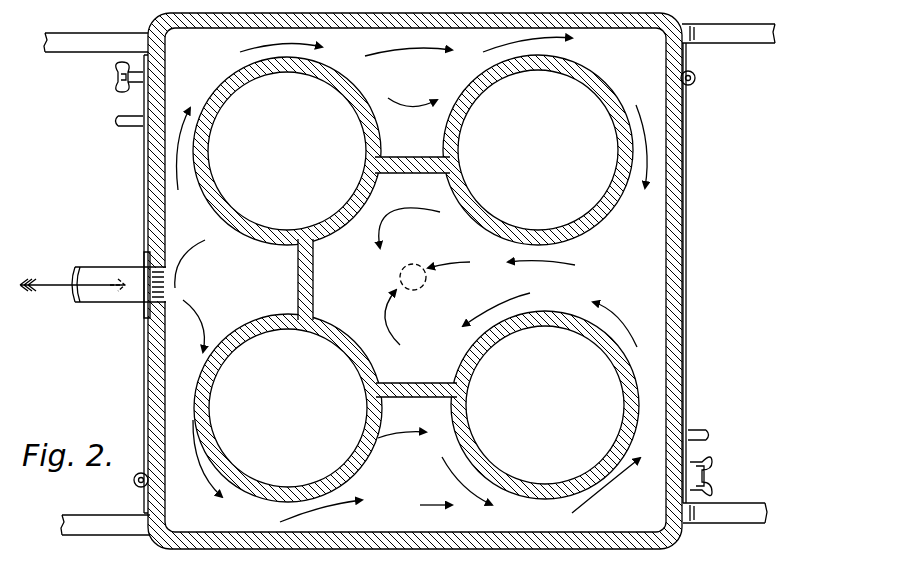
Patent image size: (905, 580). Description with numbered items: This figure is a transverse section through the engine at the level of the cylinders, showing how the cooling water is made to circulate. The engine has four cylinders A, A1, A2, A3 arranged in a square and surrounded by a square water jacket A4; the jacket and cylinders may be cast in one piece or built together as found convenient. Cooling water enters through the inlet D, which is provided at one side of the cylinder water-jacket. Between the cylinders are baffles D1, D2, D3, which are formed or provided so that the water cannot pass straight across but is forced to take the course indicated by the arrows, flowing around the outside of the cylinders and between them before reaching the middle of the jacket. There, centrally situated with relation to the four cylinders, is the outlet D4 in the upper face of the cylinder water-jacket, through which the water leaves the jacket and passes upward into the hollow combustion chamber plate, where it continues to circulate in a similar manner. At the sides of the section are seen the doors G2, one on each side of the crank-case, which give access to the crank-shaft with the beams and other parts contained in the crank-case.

The cylinder A is at (288, 408).
The cylinder A1 is at (287, 151).
The cylinder A2 is at (538, 150).
The cylinder A3 is at (545, 405).
The water jacket A4 is at (672, 262).
The inlet D is at (108, 295).
The baffle D1 is at (313, 280).
The baffle D2 is at (402, 160).
The baffle D3 is at (403, 382).
The outlet D4 is at (420, 263).
The door G2 is at (147, 187).